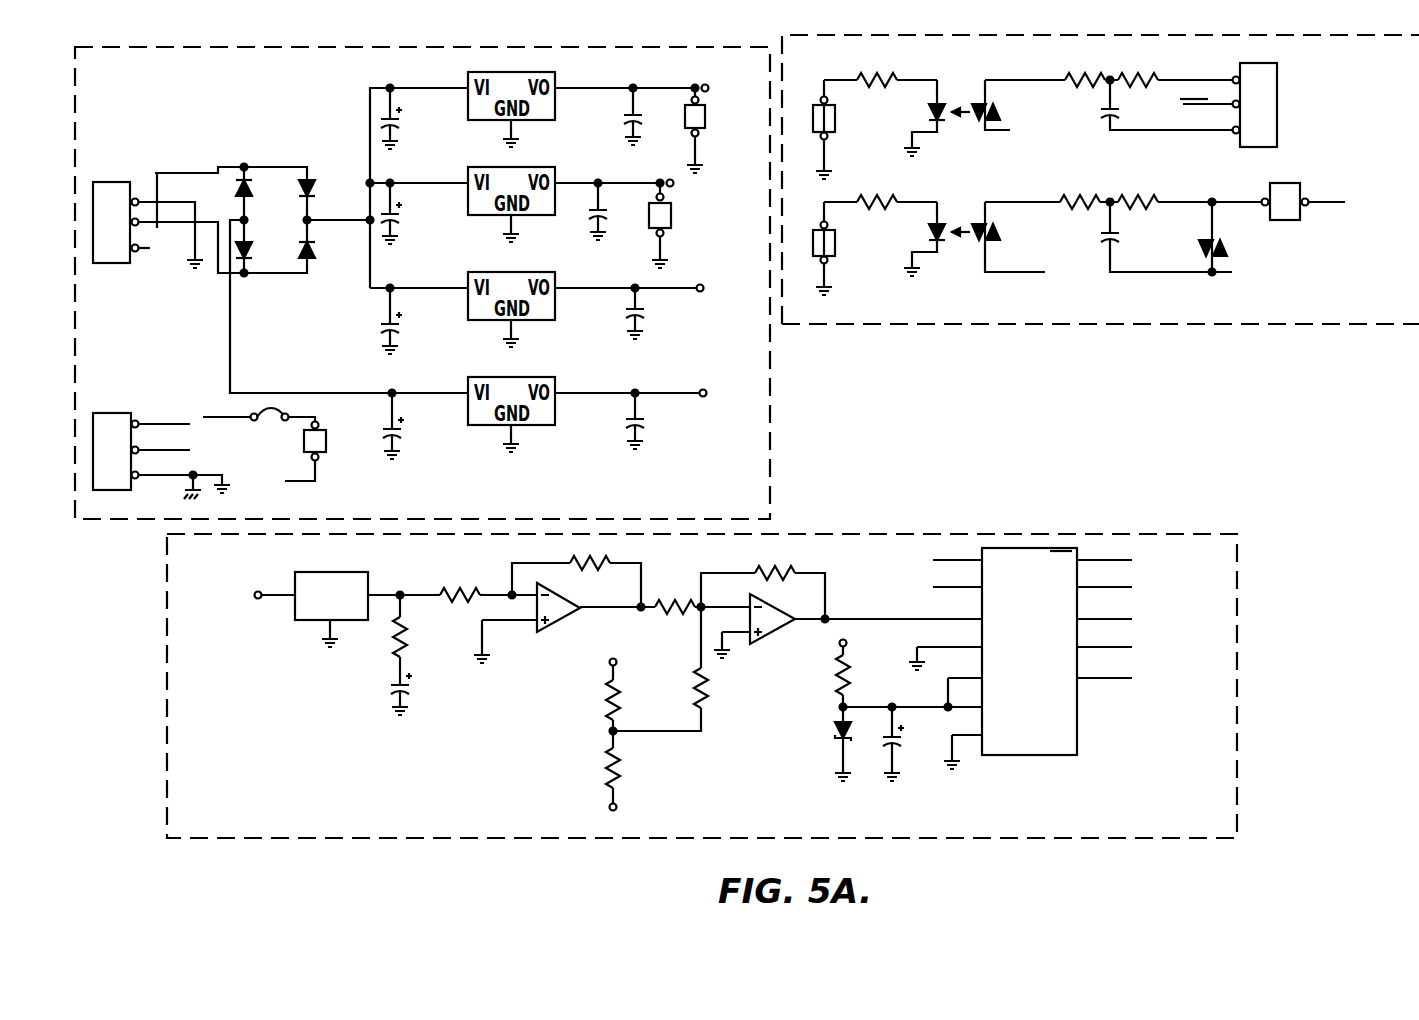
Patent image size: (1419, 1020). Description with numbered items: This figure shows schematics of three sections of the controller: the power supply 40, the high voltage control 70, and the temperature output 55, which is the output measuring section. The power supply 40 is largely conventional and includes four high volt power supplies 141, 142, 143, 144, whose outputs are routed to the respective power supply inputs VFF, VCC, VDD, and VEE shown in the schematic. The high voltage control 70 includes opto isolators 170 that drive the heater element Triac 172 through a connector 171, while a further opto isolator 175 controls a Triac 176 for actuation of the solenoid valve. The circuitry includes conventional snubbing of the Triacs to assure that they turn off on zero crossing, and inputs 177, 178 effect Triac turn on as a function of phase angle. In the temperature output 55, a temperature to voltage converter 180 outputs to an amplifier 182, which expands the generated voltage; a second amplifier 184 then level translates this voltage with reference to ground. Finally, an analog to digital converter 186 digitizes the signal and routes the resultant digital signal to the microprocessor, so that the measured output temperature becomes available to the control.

The power supply 40 is at (158, 355).
The high voltage control 70 is at (960, 317).
The temperature output 55 is at (1178, 530).
The high volt power supply 141 is at (706, 86).
The high volt power supply 142 is at (659, 181).
The high volt power supply 143 is at (699, 284).
The high volt power supply 144 is at (704, 390).
The opto isolators 170 is at (962, 100).
The connector 171 is at (1278, 96).
The heater element Triac 172 is at (1153, 248).
The opto isolator 175 is at (960, 220).
The Triac 176 is at (1217, 239).
The input 177 is at (826, 139).
The input 178 is at (826, 263).
The temperature to voltage converter 180 is at (352, 574).
The amplifier 182 is at (555, 628).
The amplifier 184 is at (758, 640).
The analog to digital converter 186 is at (1050, 756).